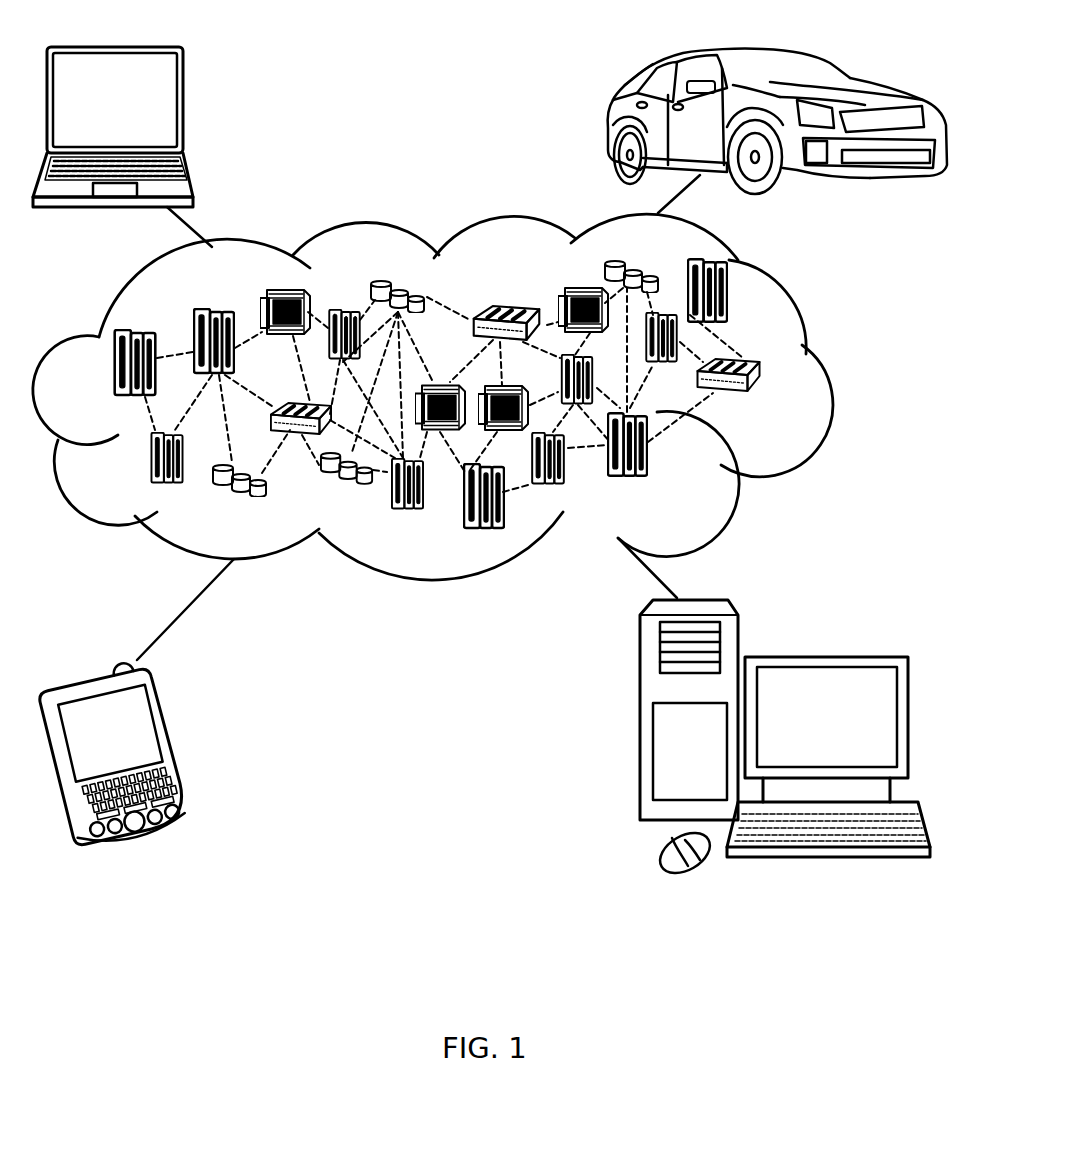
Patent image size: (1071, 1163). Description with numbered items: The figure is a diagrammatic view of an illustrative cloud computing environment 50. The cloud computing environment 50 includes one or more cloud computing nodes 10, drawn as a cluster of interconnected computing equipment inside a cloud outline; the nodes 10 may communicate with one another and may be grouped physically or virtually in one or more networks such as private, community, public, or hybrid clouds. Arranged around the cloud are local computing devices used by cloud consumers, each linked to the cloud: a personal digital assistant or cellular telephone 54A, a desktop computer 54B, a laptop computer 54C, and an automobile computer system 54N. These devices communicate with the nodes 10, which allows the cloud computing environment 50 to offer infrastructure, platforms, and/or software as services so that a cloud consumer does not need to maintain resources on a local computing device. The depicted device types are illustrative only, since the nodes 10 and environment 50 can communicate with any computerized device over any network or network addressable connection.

The cloud computing node 10 is at (767, 402).
The cloud computing environment 50 is at (825, 370).
The personal digital assistant or cellular telephone 54A is at (173, 747).
The desktop computer 54B is at (823, 657).
The laptop computer 54C is at (183, 105).
The automobile computer system 54N is at (610, 125).